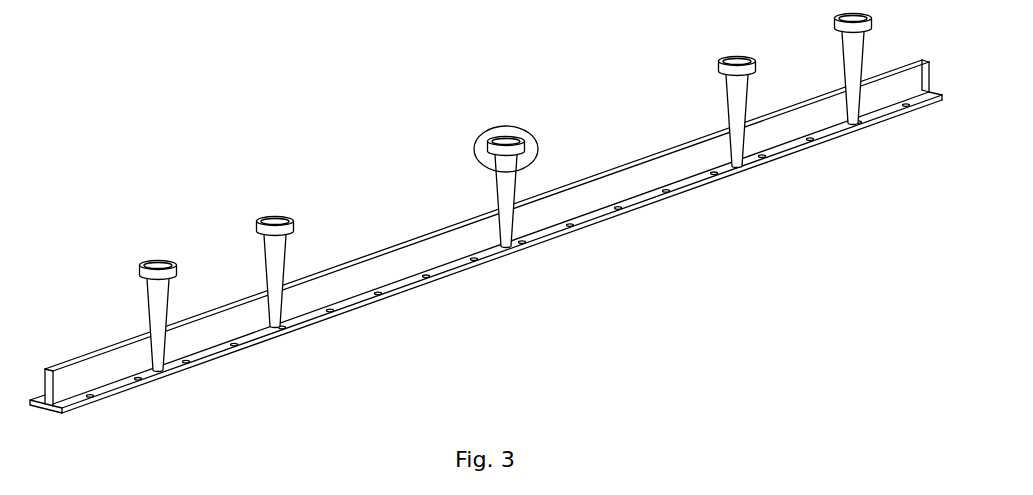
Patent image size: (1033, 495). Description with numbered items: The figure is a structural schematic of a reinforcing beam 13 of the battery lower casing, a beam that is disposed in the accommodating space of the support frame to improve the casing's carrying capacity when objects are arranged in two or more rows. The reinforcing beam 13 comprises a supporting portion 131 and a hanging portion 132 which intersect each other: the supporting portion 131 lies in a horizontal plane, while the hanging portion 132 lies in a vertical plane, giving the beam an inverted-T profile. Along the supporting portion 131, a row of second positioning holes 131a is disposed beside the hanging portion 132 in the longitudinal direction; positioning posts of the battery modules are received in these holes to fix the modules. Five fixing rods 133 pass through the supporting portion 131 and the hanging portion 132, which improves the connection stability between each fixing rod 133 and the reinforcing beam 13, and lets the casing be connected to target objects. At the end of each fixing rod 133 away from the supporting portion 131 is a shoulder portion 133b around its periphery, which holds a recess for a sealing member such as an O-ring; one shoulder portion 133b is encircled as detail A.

The reinforcing beam 13 is at (500, 28).
The supporting portion 131 is at (455, 265).
The second positioning holes 131a is at (628, 205).
The hanging portion 132 is at (678, 163).
The fixing rod 133 is at (506, 193).
The shoulder portion 133b is at (489, 143).
The detail area A is at (537, 133).